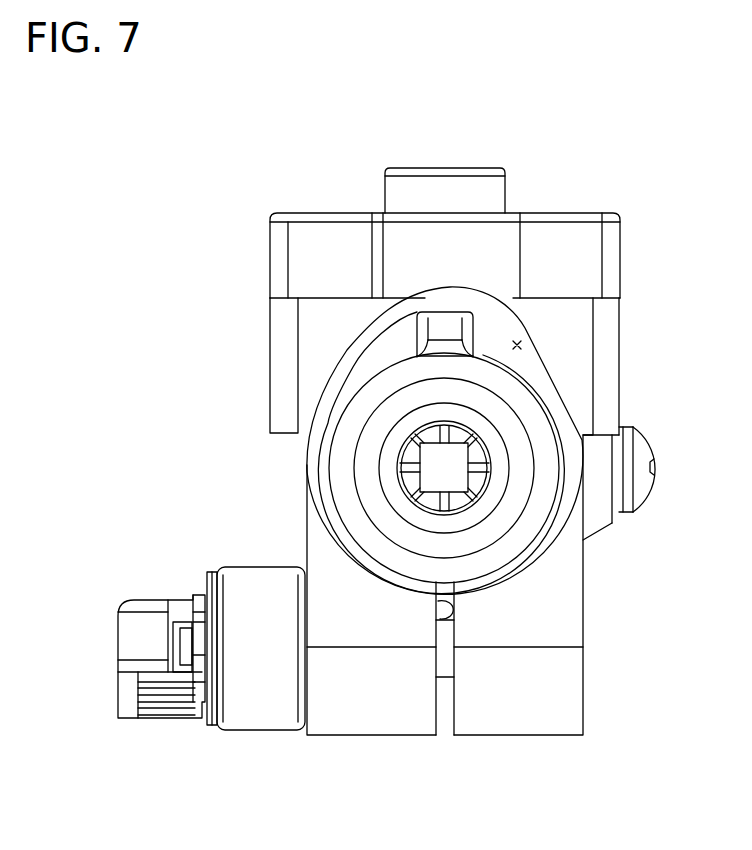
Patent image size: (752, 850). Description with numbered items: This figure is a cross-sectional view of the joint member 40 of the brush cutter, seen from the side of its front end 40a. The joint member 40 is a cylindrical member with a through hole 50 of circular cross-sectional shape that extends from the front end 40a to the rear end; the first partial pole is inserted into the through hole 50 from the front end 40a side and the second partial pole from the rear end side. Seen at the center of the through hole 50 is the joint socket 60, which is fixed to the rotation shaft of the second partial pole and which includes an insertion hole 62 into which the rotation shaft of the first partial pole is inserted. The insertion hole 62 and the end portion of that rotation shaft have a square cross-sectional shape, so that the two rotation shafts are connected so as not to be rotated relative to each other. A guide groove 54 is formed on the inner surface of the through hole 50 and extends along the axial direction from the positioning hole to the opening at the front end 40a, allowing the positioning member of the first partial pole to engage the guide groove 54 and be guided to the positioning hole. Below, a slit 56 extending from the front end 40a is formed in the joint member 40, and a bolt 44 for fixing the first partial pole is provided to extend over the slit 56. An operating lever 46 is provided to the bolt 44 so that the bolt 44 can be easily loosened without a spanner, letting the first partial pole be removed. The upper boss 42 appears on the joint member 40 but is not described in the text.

The joint member 40 is at (529, 327).
The front end 40a is at (520, 345).
The upper boss 42 is at (460, 167).
The bolt 44 is at (447, 678).
The operating lever 46 is at (140, 602).
The through hole 50 is at (368, 387).
The guide groove 54 is at (420, 333).
The slit 56 is at (452, 615).
The joint socket 60 is at (385, 443).
The insertion hole 62 is at (421, 458).